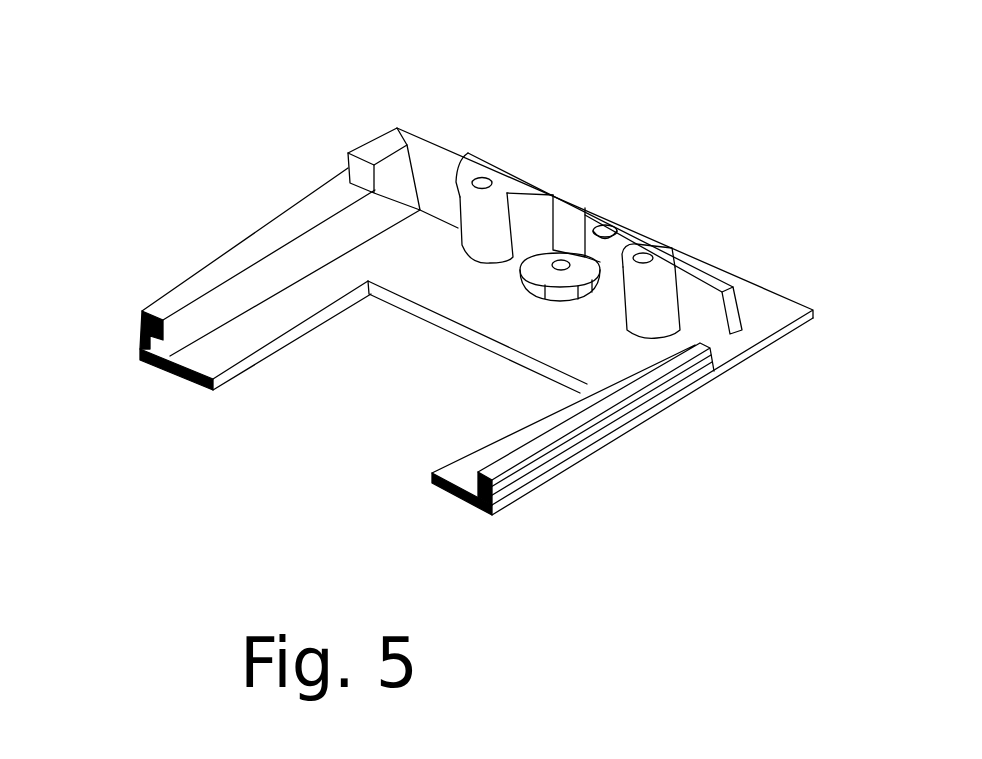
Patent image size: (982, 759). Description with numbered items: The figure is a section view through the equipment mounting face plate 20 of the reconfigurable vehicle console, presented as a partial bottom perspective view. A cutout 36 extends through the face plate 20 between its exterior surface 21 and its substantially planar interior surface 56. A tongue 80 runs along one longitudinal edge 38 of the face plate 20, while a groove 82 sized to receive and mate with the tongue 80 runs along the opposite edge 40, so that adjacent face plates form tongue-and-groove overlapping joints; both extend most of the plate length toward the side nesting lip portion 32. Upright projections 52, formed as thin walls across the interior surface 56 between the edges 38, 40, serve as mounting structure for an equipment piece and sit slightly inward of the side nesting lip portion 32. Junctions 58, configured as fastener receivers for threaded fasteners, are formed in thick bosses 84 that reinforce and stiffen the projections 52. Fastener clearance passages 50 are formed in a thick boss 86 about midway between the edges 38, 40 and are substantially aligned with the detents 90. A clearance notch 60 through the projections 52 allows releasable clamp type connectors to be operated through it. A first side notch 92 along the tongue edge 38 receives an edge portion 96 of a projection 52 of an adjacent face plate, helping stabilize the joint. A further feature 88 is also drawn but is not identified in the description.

The face plate 20 is at (443, 493).
The exterior surface 21 is at (180, 374).
The side nesting lip portion 32 is at (767, 308).
The cutout 36 is at (245, 367).
The tongue edge 38 is at (781, 338).
The groove edge 40 is at (222, 260).
The fastener clearance passage 50 is at (557, 268).
The upright projection 52 is at (724, 278).
The interior surface 56 is at (330, 283).
The junction 58 is at (493, 180).
The clearance notch 60 is at (582, 253).
The tongue 80 is at (510, 500).
The groove 82 is at (140, 340).
The thick boss 84 is at (487, 262).
The thick boss 86 is at (540, 268).
The bracket 88 is at (555, 210).
The detent 90 is at (606, 228).
The first side notch 92 is at (740, 305).
The edge portion 96 is at (385, 148).